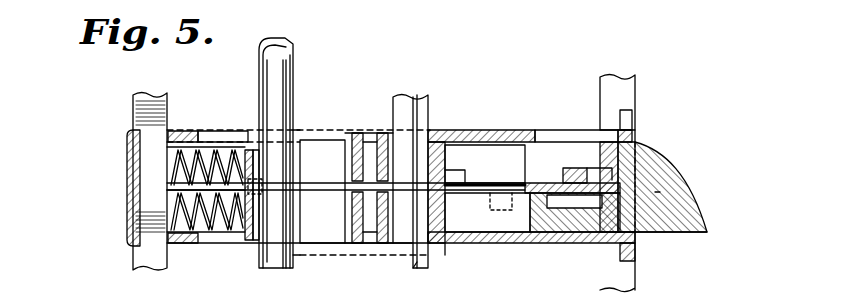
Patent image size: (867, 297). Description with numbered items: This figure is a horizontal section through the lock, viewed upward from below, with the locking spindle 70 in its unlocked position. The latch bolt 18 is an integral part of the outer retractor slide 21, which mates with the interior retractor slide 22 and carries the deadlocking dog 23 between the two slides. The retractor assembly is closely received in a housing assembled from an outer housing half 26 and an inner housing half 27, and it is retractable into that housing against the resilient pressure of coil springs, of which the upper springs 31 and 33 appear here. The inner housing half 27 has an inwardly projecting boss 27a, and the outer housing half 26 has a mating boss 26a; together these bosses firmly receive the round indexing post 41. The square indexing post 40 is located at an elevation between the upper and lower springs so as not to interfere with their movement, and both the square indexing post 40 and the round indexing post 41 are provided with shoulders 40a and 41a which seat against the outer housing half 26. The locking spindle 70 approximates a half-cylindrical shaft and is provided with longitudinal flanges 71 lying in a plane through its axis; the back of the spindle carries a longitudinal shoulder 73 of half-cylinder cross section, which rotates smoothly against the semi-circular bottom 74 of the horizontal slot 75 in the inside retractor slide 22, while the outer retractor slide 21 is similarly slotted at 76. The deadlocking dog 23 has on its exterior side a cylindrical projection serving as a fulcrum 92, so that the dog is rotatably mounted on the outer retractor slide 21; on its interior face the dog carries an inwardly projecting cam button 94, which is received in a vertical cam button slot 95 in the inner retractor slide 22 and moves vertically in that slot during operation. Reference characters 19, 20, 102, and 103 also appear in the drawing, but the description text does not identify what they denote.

The latch bolt 18 is at (690, 232).
The stop 19 is at (635, 130).
The cam head 20 is at (700, 203).
The outer retractor slide 21 is at (632, 246).
The interior retractor slide 22 is at (598, 148).
The deadlocking dog 23 is at (505, 185).
The outer housing half 26 is at (540, 240).
The mating boss 26a is at (434, 215).
The inner housing half 27 is at (495, 130).
The inwardly projecting boss 27a is at (440, 156).
The coil spring 31 is at (210, 228).
The coil spring 33 is at (178, 167).
The square indexing post 40 is at (148, 192).
The shoulder 40a is at (150, 242).
The round indexing post 41 is at (420, 110).
The shoulder 41a is at (421, 251).
The locking spindle 70 is at (286, 72).
The longitudinal flanges 71 is at (295, 120).
The longitudinal shoulder 73 is at (270, 108).
The semi-circular bottom 74 is at (258, 150).
The horizontal slot 75 is at (312, 152).
The slot 76 is at (298, 225).
The fulcrum 92 is at (510, 200).
The cam button 94 is at (572, 168).
The cam button slot 95 is at (602, 186).
The lower block 102 is at (582, 205).
The cam surface 103 is at (655, 193).